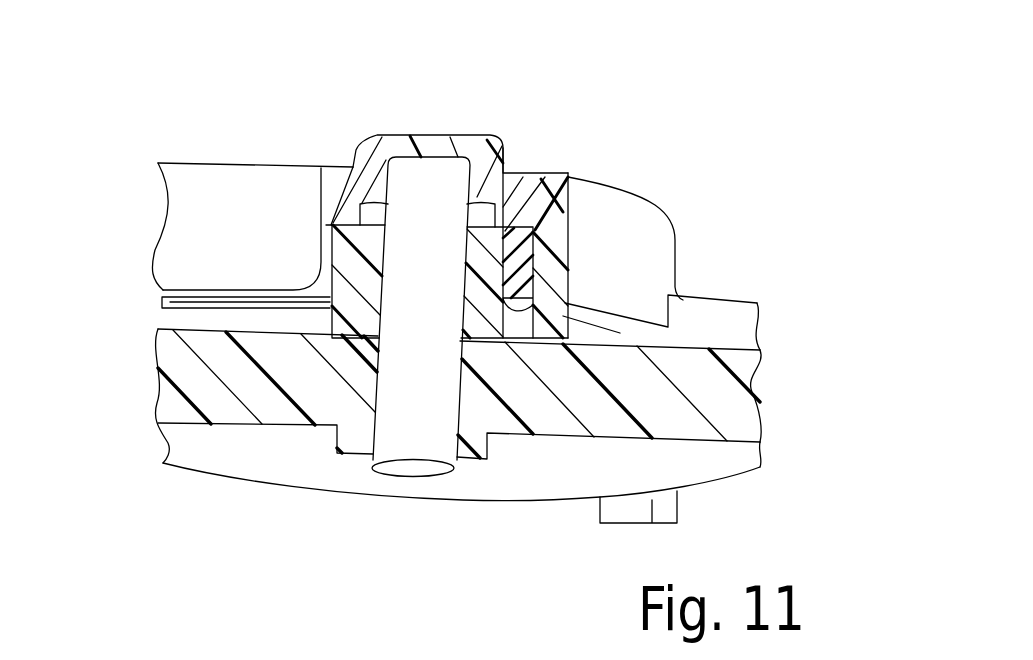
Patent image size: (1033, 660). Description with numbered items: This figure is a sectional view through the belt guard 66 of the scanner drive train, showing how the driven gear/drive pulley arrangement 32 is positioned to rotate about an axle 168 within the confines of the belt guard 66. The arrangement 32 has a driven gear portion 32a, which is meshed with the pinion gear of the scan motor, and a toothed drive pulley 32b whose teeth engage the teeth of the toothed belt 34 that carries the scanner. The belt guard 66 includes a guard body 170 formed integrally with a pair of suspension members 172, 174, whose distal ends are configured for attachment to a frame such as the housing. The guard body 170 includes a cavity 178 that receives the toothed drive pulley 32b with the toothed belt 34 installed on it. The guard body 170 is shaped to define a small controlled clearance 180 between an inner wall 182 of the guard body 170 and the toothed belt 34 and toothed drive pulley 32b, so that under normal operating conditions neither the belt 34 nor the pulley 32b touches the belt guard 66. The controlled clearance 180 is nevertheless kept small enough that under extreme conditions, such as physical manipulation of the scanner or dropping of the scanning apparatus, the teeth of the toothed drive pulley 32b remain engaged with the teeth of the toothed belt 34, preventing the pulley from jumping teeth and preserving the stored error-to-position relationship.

The driven gear/drive pulley arrangement 32 is at (128, 418).
The driven gear portion 32a is at (162, 364).
The toothed drive pulley 32b is at (332, 307).
The toothed belt 34 is at (540, 177).
The belt guard 66 is at (523, 110).
The axle 168 is at (403, 467).
The guard body 170 is at (357, 146).
The suspension member 172 is at (190, 163).
The suspension member 174 is at (713, 303).
The cavity 178 is at (427, 176).
The controlled clearance 180 is at (536, 293).
The inner wall 182 is at (568, 253).